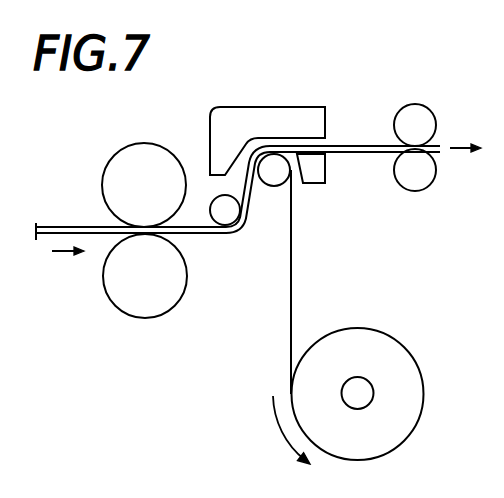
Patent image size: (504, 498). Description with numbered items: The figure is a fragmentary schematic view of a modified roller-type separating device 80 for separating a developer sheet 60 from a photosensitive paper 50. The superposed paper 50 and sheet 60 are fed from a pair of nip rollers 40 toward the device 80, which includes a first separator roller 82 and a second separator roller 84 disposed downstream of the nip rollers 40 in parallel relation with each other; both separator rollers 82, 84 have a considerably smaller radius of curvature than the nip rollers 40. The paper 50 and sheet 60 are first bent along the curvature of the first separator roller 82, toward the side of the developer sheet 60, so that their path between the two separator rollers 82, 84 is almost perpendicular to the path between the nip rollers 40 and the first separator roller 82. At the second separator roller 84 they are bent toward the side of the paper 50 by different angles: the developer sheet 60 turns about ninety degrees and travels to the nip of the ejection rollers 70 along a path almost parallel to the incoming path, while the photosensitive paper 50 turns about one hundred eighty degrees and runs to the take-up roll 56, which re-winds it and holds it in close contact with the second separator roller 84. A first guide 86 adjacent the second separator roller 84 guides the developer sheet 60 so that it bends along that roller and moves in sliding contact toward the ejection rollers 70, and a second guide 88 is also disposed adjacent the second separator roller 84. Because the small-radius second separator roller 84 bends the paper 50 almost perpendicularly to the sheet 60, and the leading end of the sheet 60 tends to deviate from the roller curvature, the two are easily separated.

The nip rollers 40 is at (144, 145).
The photosensitive paper 50 is at (292, 278).
The take-up roll 56 is at (418, 390).
The developer sheet 60 is at (356, 147).
The ejection rollers 70 is at (413, 113).
The separating device 80 is at (245, 74).
The first separator roller 82 is at (223, 213).
The second separator roller 84 is at (272, 178).
The first guide 86 is at (313, 112).
The second guide 88 is at (316, 177).